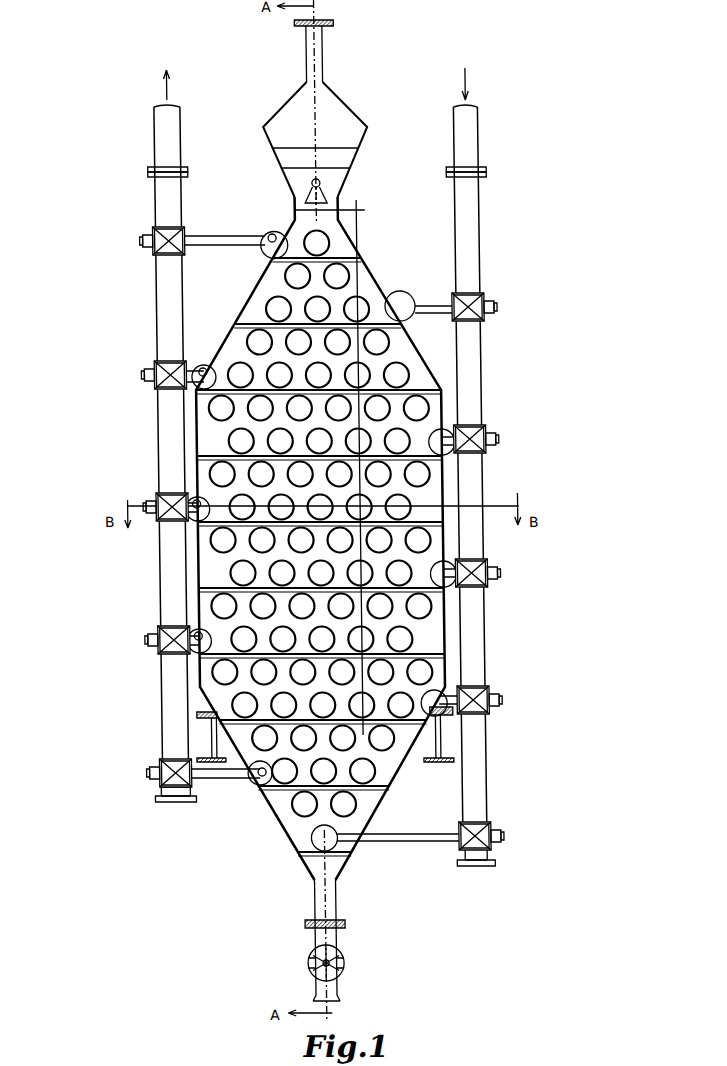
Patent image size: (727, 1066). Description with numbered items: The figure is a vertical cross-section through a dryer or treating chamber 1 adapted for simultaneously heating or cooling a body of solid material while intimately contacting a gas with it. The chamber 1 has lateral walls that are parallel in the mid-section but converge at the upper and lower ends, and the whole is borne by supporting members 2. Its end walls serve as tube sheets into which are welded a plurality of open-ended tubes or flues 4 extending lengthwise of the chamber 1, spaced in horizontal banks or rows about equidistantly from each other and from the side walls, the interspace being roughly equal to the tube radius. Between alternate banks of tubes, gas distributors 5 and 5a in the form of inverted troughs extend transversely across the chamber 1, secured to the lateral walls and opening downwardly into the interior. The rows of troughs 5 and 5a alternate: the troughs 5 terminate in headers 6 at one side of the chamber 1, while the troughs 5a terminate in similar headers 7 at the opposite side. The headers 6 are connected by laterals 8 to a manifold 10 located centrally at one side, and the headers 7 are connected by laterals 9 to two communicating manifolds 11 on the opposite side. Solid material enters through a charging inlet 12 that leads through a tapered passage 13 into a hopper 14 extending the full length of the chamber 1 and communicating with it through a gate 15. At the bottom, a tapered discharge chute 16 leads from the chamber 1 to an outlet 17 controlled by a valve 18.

The chamber 1 is at (440, 492).
The supporting members 2 is at (200, 742).
The tubes or flues 4 is at (200, 560).
The gas distributors (inverted troughs) 5 is at (244, 318).
The gas distributors (inverted troughs) 5a is at (343, 255).
The headers 6 is at (385, 292).
The headers 7 is at (258, 250).
The laterals 8 is at (426, 309).
The laterals 9 is at (209, 237).
The manifold 10 is at (476, 215).
The manifolds 11 is at (151, 285).
The charging inlet 12 is at (337, 23).
The tapered passage 13 is at (323, 71).
The hopper 14 is at (352, 131).
The gate 15 is at (306, 197).
The tapered discharge chute 16 is at (302, 891).
The outlet 17 is at (326, 940).
The valve 18 is at (296, 963).